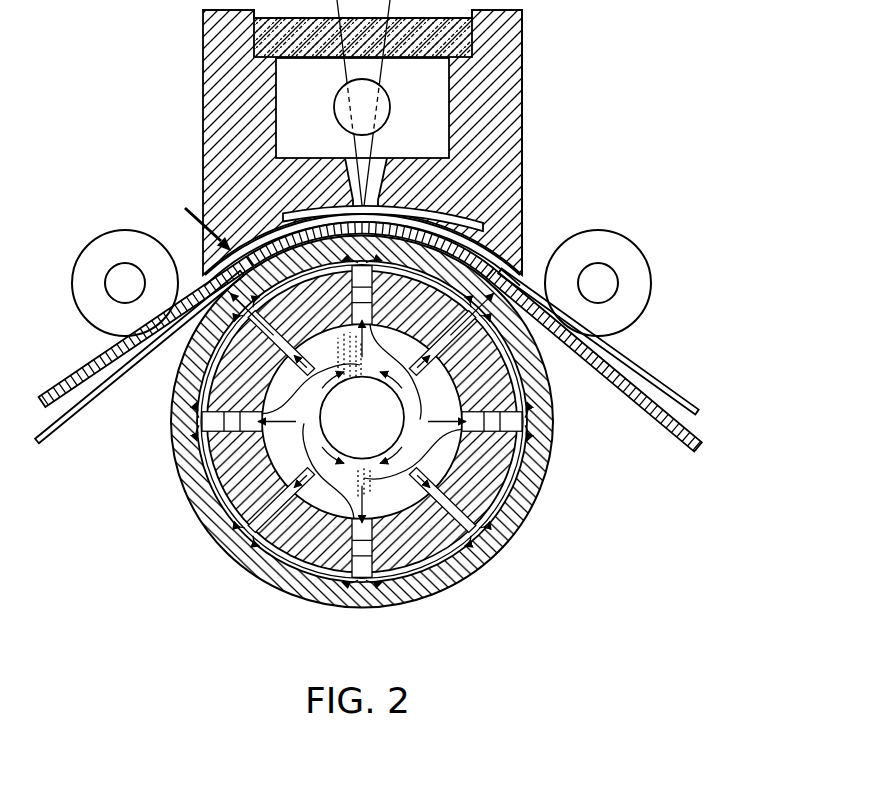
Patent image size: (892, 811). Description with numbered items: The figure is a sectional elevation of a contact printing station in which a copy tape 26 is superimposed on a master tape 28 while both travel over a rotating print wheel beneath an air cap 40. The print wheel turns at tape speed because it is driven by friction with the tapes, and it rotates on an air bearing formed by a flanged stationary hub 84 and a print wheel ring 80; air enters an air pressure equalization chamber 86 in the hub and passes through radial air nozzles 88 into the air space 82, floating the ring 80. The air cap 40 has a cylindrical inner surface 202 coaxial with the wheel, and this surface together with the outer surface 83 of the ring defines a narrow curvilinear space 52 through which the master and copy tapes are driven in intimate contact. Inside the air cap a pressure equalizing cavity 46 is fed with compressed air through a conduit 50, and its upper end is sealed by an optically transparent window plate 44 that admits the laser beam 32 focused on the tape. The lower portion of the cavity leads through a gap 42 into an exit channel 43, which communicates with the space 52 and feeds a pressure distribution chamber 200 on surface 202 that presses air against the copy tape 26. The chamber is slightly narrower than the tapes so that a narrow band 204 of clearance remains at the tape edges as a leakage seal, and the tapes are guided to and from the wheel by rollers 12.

The guide roller 12 is at (89, 246).
The copy tape 26 is at (90, 367).
The master tape 28 is at (67, 418).
The laser beam 32 is at (344, 70).
The air cap 40 is at (467, 121).
The gap 42 is at (352, 157).
The exit channel 43 is at (381, 157).
The optically transparent window plate 44 is at (458, 30).
The pressure equalizing cavity 46 is at (437, 100).
The conduit 50 is at (390, 108).
The curvilinear space 52 is at (190, 208).
The print wheel ring 80 is at (362, 438).
The air space 82 is at (362, 438).
The outer surface 83 is at (379, 421).
The flanged stationary hub 84 is at (362, 444).
The air pressure equalization chamber 86 is at (325, 422).
The radial air nozzles 88 is at (362, 422).
The chamber 200 is at (510, 187).
The inner surface 202 is at (203, 274).
The narrow band 204 is at (526, 215).